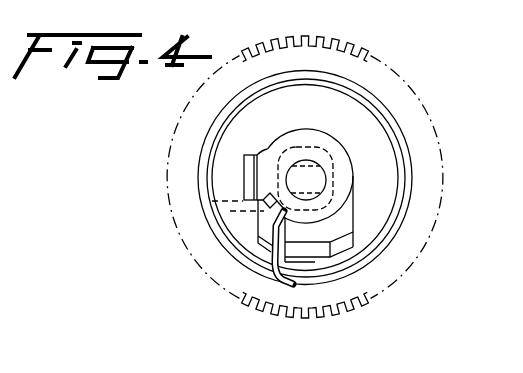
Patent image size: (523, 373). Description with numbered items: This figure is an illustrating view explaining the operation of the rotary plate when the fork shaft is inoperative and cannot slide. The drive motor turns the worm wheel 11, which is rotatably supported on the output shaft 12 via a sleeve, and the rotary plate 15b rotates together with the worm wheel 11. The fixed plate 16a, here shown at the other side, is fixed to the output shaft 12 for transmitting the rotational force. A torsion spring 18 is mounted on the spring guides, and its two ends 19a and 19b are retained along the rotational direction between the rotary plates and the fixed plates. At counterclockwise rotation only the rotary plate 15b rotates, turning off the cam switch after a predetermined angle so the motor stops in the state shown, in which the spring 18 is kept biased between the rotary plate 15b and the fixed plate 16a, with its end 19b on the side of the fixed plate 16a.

The worm wheel 11 is at (371, 55).
The output shaft 12 is at (318, 178).
The rotary plate 15b is at (303, 258).
The fixed plate 16a is at (244, 165).
The torsion spring 18 is at (408, 210).
The spring end 19a is at (277, 245).
The spring end 19b is at (237, 213).